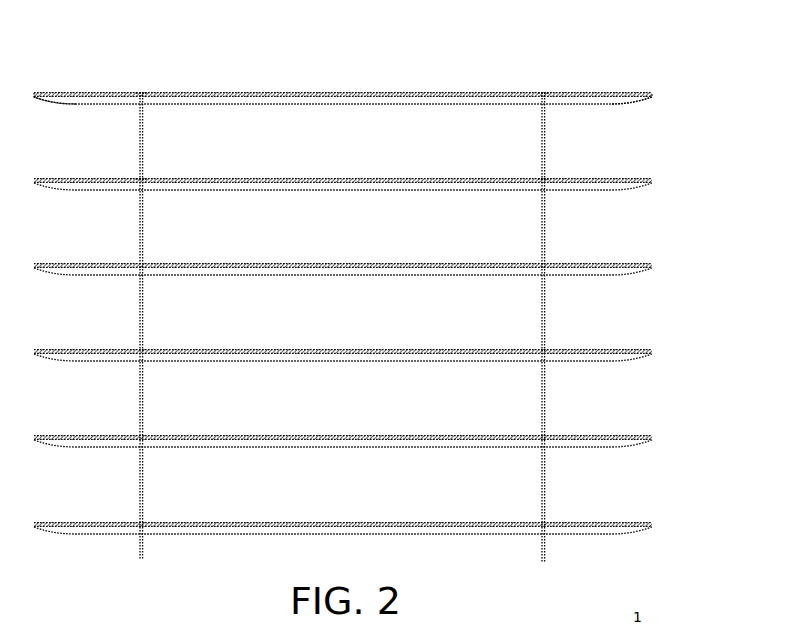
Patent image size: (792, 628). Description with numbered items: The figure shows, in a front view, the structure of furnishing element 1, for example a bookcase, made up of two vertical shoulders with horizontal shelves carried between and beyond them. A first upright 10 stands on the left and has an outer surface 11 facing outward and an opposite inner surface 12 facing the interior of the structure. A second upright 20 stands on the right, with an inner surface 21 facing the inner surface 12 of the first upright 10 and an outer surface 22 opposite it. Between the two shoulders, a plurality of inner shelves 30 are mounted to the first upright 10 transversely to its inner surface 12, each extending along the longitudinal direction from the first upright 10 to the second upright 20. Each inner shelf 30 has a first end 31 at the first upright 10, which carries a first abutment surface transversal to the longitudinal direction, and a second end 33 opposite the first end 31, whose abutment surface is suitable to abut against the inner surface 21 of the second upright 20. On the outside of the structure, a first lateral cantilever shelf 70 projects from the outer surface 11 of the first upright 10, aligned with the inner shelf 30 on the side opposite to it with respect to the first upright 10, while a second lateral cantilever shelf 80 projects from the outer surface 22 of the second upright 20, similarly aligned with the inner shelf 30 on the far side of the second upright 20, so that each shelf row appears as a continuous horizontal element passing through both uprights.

The structure of furnishing element 1 is at (664, 134).
The first upright 10 is at (161, 326).
The outer surface 11 is at (140, 500).
The inner surface 12 is at (143, 510).
The second upright 20 is at (524, 327).
The inner surface 21 is at (540, 500).
The outer surface 22 is at (543, 500).
The inner shelf 30 is at (363, 92).
The first end 31 is at (141, 96).
The second end 33 is at (541, 97).
The first lateral cantilever shelf 70 is at (72, 90).
The second lateral cantilever shelf 80 is at (578, 90).